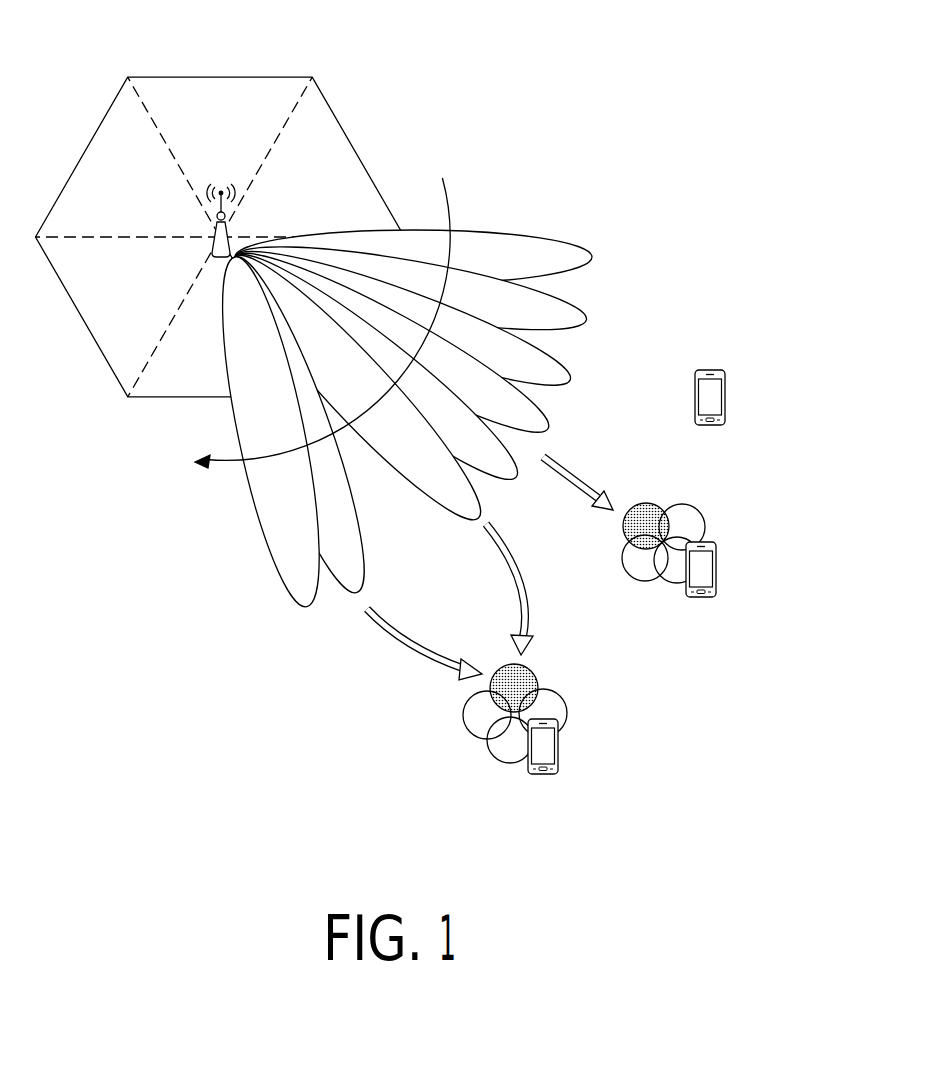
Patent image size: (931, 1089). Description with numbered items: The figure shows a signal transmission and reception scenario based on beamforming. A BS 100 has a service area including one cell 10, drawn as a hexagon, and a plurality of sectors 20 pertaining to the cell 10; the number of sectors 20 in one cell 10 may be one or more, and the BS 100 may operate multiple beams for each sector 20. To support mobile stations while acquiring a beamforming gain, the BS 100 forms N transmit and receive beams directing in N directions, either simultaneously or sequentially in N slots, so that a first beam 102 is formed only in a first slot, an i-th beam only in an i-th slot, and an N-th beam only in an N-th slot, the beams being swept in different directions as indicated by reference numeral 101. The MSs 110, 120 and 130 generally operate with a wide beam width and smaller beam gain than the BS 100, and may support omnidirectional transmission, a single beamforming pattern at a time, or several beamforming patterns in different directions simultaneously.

The cell 10 is at (221, 77).
The sector 20 is at (344, 149).
The BS 100 is at (209, 233).
The beam sweeping 101 is at (448, 196).
The first beam 102 is at (592, 257).
The MS 110 is at (726, 395).
The MS 120 is at (717, 566).
The MS 130 is at (559, 743).